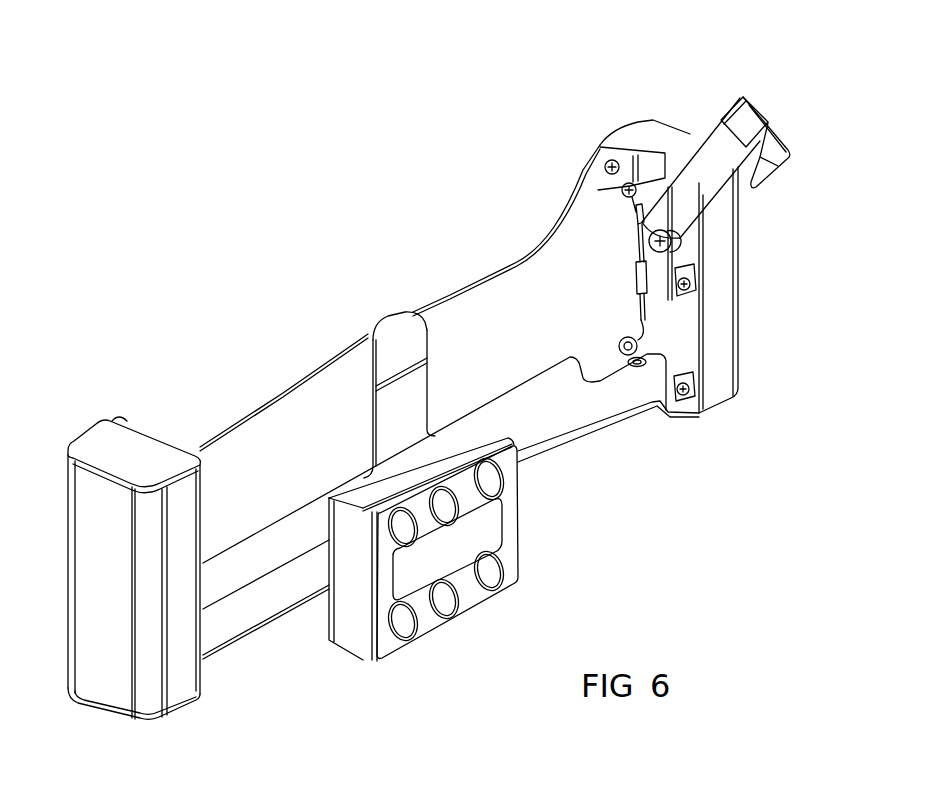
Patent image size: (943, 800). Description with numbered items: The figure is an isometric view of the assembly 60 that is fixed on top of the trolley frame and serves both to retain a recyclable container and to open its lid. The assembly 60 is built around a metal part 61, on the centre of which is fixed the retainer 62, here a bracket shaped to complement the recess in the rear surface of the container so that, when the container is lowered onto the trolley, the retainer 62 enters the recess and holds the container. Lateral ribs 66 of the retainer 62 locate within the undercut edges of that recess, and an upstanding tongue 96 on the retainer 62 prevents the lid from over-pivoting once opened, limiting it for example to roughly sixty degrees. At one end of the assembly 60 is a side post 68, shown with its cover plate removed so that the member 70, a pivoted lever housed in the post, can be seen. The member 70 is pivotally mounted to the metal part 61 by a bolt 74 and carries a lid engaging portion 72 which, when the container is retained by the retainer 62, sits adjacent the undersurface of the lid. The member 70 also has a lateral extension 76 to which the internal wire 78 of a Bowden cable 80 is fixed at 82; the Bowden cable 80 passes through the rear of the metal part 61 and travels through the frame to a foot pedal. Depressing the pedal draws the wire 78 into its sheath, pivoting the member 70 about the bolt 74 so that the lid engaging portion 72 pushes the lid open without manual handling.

The assembly 60 is at (234, 314).
The metal part 61 is at (482, 308).
The retainer 62 is at (339, 607).
The lateral ribs 66 is at (518, 499).
The side post 68 is at (733, 347).
The member 70 is at (711, 154).
The lid engaging portion 72 is at (772, 172).
The bolt 74 is at (676, 234).
The lateral extension 76 is at (652, 188).
The internal wire 78 is at (640, 238).
The Bowden cable 80 is at (640, 316).
The fixing point of wire 82 is at (617, 187).
The upstanding tongue 96 is at (388, 343).